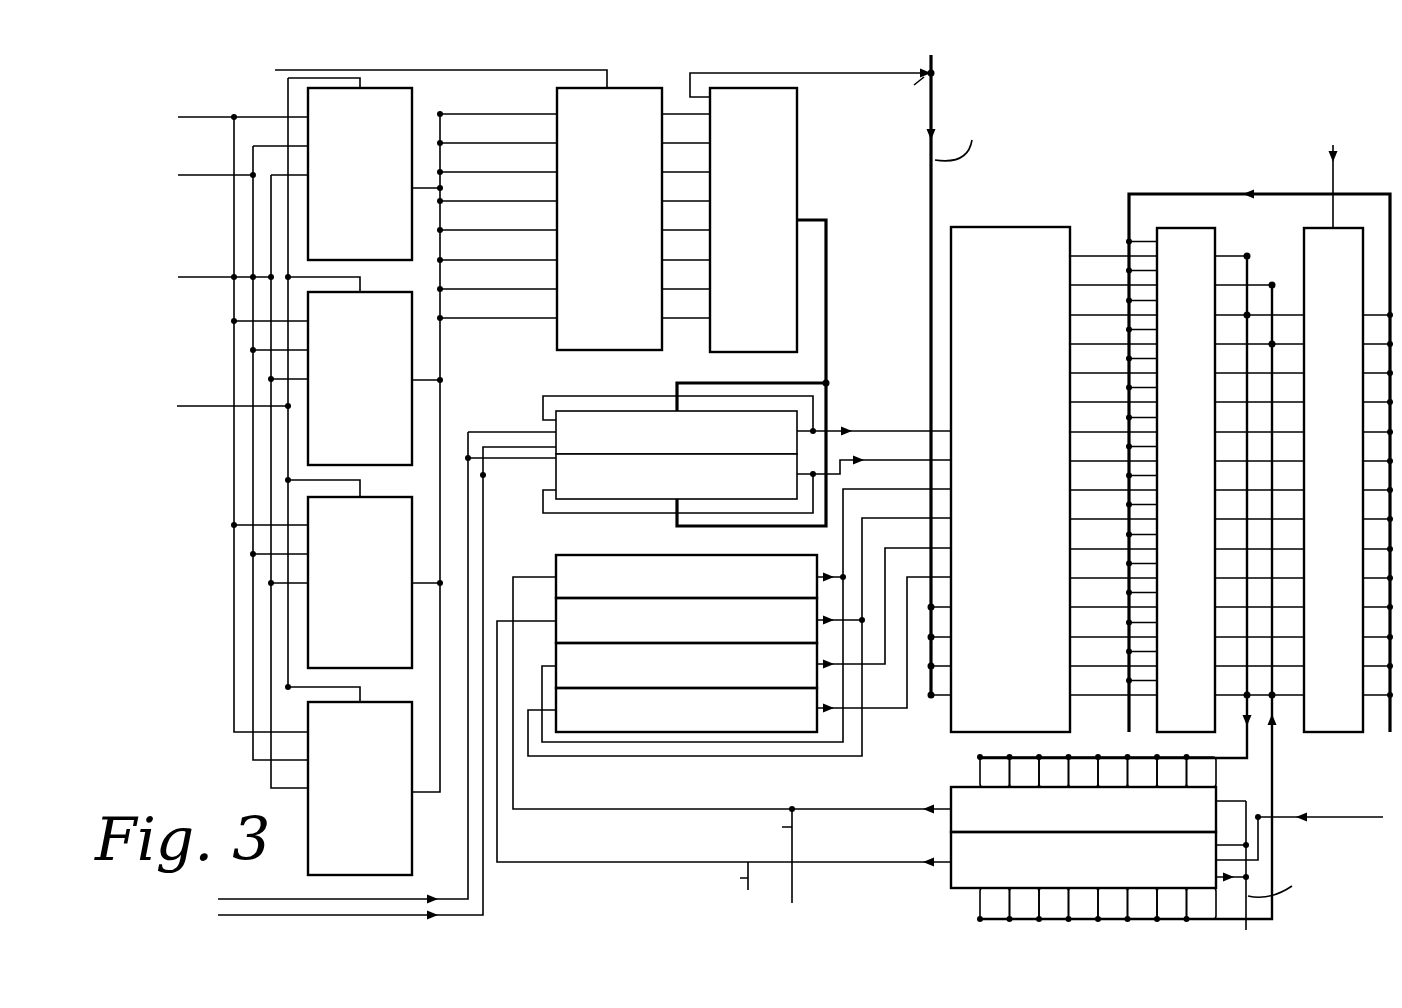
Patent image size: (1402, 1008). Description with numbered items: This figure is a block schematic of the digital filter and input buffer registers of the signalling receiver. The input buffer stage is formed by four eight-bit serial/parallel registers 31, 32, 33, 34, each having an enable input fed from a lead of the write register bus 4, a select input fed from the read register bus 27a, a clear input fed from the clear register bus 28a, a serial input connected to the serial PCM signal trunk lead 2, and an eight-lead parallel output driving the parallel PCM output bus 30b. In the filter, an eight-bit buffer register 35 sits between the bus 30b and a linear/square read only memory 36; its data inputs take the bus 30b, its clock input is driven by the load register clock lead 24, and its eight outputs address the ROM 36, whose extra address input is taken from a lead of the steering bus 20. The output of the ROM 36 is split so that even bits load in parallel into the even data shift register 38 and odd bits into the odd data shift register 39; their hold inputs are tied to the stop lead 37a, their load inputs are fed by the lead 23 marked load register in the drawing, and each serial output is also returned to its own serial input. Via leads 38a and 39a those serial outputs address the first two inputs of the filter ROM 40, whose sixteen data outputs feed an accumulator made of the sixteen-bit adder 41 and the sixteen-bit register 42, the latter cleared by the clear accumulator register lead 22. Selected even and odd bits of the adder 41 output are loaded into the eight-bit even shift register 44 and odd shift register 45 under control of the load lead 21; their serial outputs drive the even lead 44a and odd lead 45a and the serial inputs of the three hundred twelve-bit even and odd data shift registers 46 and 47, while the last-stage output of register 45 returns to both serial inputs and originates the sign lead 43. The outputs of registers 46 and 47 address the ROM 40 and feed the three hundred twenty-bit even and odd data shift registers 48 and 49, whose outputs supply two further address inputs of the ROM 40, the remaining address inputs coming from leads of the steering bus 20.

The write register bus 4 is at (178, 116).
The read register bus 27a is at (138, 178).
The clear register bus 28a is at (138, 278).
The serial PCM signal trunk lead 2 is at (222, 406).
The 8-bit serial/parallel register 31 is at (412, 103).
The 8-bit serial/parallel register 32 is at (412, 300).
The 8-bit serial/parallel register 33 is at (412, 506).
The 8-bit serial/parallel register 34 is at (412, 818).
The parallel PCM output bus 30b is at (440, 350).
The load register clock lead 24 is at (607, 80).
The 8-bit buffer register 35 is at (608, 353).
The linear/square read only memory 36 is at (797, 144).
The steering bus 20 is at (933, 62).
The clear accumulator register lead 22 is at (1333, 173).
The filter ROM 40 is at (1003, 241).
The 16-bit adder 41 is at (1200, 230).
The 16-bit register 42 is at (1304, 241).
The even data shift register 38 is at (543, 420).
The odd data shift register 39 is at (543, 495).
The lead 38a is at (850, 428).
The lead 39a is at (862, 457).
The 312-bit even data shift register 46 is at (573, 572).
The 312-bit odd data shift register 47 is at (556, 611).
The 320-bit serial even data shift register 48 is at (556, 655).
The 320-bit serial odd data shift register 49 is at (590, 738).
The eight-bit even shift register 44 is at (955, 787).
The eight-bit odd shift register 45 is at (951, 876).
The even lead 44a is at (771, 854).
The odd lead 45a is at (725, 876).
The load register line 23 is at (468, 889).
The stop lead 37a is at (483, 906).
The load lead 21 is at (1305, 822).
The sign lead 43 is at (1248, 910).